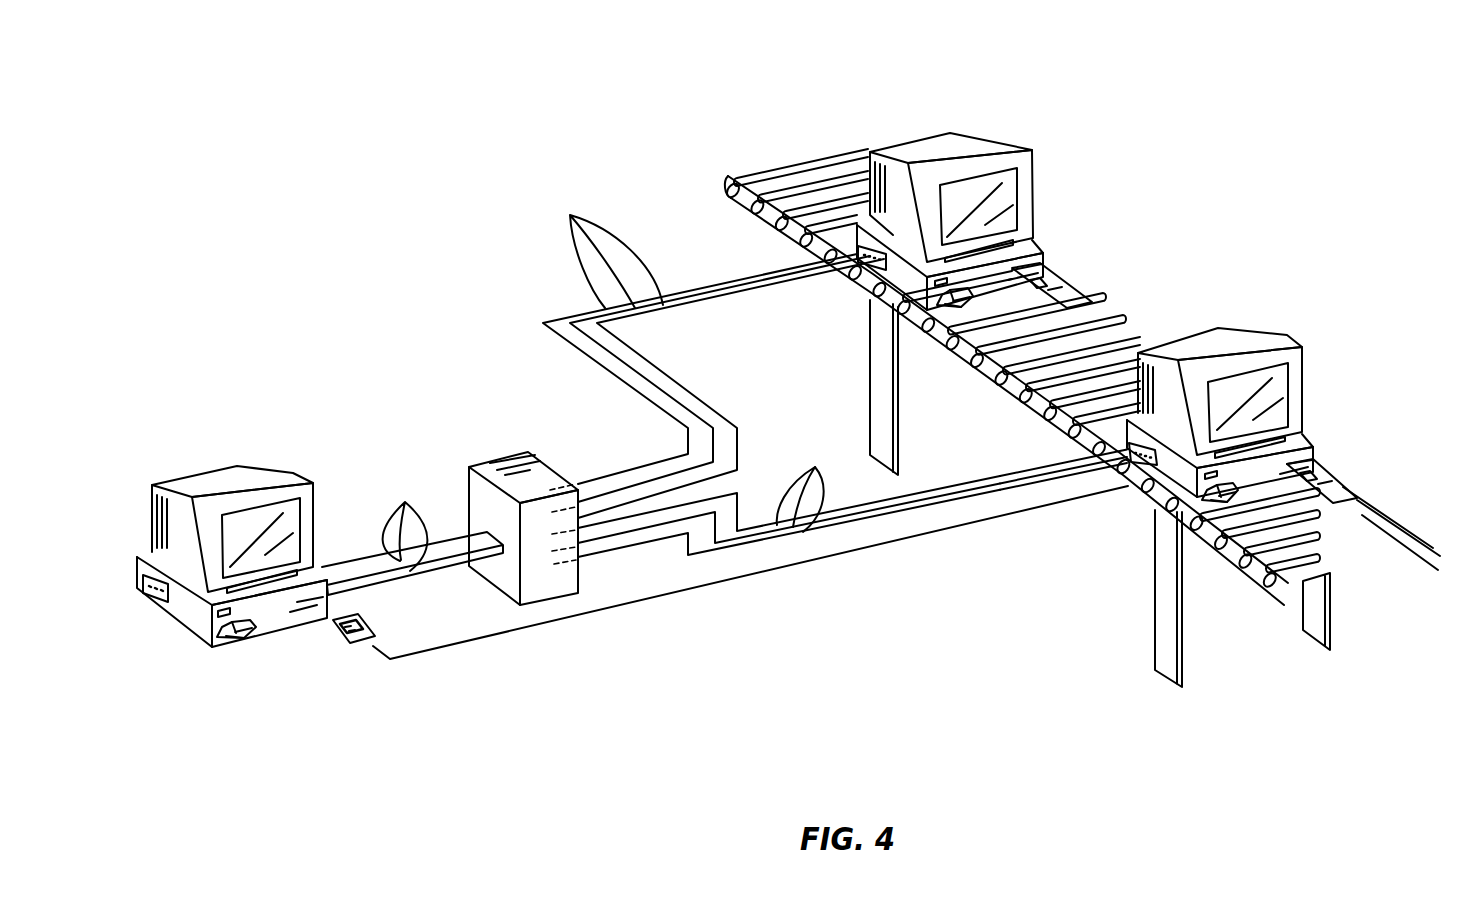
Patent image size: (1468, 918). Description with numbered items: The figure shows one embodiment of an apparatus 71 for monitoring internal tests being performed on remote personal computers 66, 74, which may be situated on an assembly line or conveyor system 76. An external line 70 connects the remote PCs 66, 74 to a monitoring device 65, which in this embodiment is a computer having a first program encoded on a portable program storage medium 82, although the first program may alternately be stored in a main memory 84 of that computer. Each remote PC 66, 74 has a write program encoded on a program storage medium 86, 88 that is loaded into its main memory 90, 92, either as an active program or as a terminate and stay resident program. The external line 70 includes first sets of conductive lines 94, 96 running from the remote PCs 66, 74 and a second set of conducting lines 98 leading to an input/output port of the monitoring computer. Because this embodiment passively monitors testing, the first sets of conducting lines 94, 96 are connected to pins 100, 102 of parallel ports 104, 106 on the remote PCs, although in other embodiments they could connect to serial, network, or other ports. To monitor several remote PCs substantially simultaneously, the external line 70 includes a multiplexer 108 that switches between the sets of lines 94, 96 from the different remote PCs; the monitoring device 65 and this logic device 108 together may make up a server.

The monitoring device 65 is at (277, 633).
The remote personal computer 66 is at (1318, 447).
The external line 70 is at (743, 578).
The apparatus 71 is at (680, 178).
The remote personal computer 74 is at (1060, 270).
The conveyor system 76 is at (1242, 578).
The portable program storage medium 82 is at (375, 622).
The main memory 84 is at (240, 638).
The program storage medium 86 is at (1357, 496).
The program storage medium 88 is at (1085, 292).
The main memory 90 is at (1245, 506).
The main memory 92 is at (960, 307).
The first set of conductive lines 94 is at (789, 492).
The first set of conductive lines 96 is at (712, 348).
The second set of conducting lines 98 is at (412, 529).
The pin 100 is at (815, 228).
The pin 102 is at (1065, 432).
The parallel port 104 is at (1147, 485).
The parallel port 106 is at (858, 272).
The multiplexer 108 is at (485, 463).